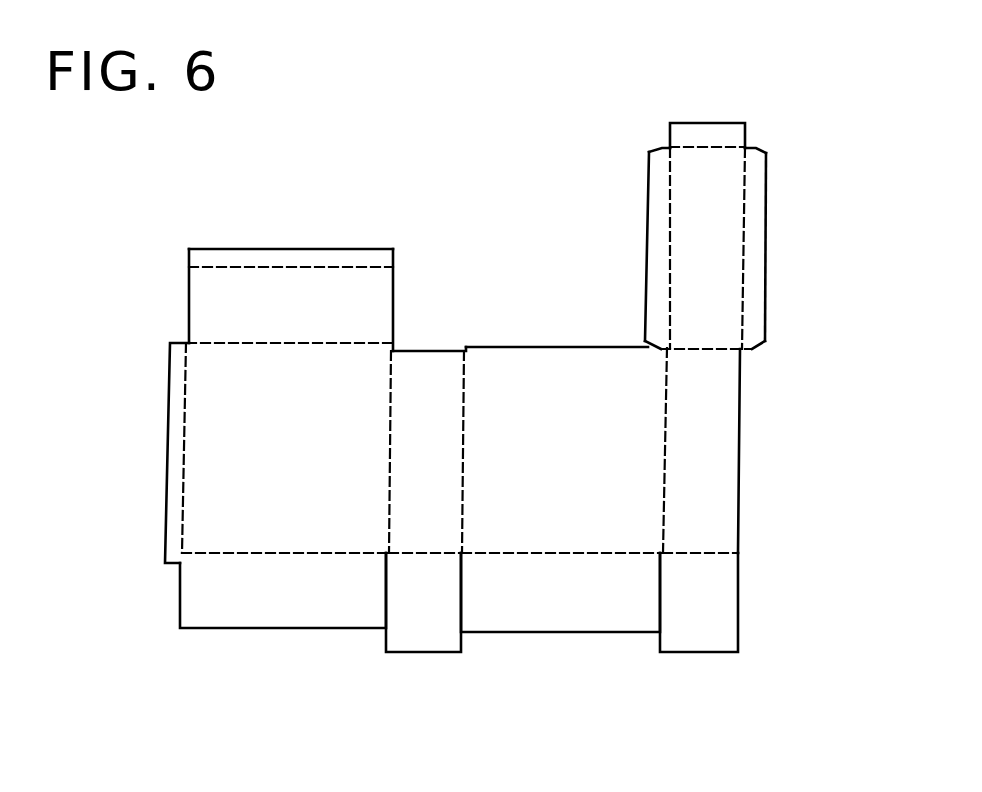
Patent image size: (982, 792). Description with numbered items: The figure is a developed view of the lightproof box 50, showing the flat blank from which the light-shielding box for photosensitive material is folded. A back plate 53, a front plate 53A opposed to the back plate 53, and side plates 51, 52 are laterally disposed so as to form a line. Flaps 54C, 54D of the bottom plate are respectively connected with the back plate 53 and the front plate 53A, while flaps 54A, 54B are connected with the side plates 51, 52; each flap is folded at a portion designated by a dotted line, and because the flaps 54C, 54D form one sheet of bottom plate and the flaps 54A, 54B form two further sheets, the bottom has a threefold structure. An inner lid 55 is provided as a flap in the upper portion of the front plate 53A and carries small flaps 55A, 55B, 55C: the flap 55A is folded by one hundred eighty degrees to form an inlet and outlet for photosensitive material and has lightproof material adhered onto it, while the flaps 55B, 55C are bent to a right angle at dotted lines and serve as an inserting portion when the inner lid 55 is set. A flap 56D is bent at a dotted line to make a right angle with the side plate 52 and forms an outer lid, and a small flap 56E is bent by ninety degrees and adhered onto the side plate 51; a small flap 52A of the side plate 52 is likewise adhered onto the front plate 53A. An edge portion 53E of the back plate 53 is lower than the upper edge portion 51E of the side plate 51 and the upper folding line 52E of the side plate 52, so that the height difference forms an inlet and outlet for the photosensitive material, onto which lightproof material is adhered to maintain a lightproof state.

The lightproof box 50 is at (316, 196).
The side plate 51 is at (596, 535).
The upper edge portion of side plate 51E is at (582, 348).
The side plate 52 is at (259, 541).
The small flap 52A is at (172, 451).
The upper folding line 52E is at (232, 345).
The back plate 53 is at (439, 373).
The front plate 53A is at (715, 492).
The edge portion of back plate 53E is at (395, 352).
The flap of bottom plate 54A is at (510, 615).
The flap of bottom plate 54B is at (333, 601).
The flap of bottom plate 54C is at (417, 625).
The flap of bottom plate 54D is at (693, 630).
The inner lid 55 is at (698, 168).
The flap 55A is at (726, 134).
The flap 55B is at (754, 243).
The flap 55C is at (657, 206).
The flap 56D is at (340, 268).
The small flap 56E is at (228, 258).